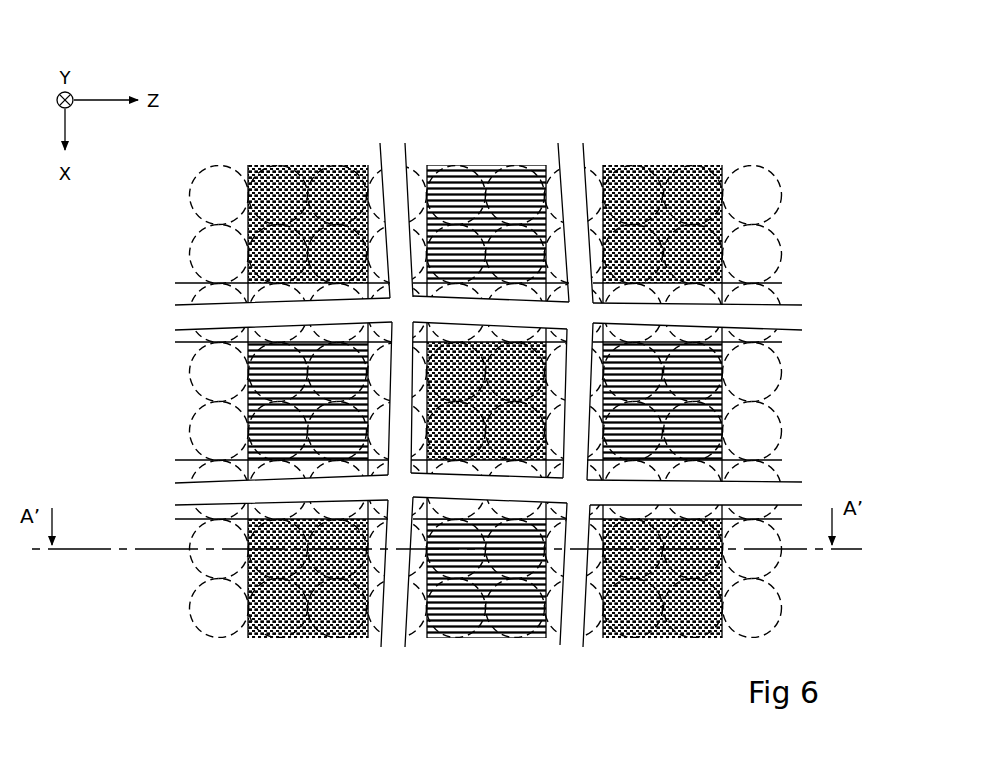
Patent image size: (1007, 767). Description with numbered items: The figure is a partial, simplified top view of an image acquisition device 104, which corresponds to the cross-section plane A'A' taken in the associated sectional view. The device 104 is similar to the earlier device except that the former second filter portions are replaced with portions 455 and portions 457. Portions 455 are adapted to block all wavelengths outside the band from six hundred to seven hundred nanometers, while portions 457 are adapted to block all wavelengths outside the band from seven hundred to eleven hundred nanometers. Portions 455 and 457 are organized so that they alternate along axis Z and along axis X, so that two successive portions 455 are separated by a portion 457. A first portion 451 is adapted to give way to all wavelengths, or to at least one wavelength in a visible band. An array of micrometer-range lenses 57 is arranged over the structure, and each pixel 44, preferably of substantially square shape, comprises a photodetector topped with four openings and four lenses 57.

The image acquisition device 104 is at (492, 348).
The first portion 451 is at (777, 166).
The portion 455 is at (510, 157).
The portion 457 is at (670, 157).
The micrometer-range lens 57 is at (211, 618).
The pixel 44 is at (248, 645).